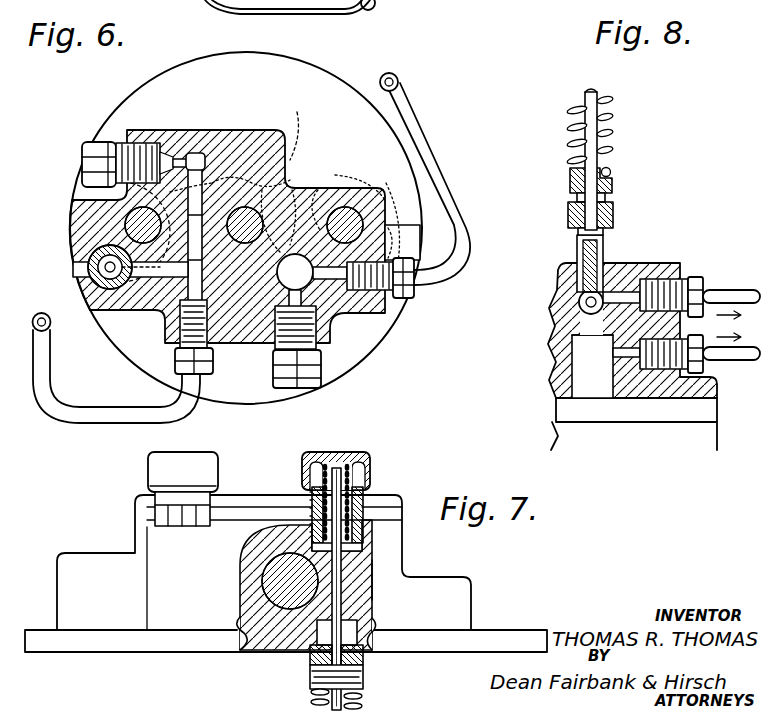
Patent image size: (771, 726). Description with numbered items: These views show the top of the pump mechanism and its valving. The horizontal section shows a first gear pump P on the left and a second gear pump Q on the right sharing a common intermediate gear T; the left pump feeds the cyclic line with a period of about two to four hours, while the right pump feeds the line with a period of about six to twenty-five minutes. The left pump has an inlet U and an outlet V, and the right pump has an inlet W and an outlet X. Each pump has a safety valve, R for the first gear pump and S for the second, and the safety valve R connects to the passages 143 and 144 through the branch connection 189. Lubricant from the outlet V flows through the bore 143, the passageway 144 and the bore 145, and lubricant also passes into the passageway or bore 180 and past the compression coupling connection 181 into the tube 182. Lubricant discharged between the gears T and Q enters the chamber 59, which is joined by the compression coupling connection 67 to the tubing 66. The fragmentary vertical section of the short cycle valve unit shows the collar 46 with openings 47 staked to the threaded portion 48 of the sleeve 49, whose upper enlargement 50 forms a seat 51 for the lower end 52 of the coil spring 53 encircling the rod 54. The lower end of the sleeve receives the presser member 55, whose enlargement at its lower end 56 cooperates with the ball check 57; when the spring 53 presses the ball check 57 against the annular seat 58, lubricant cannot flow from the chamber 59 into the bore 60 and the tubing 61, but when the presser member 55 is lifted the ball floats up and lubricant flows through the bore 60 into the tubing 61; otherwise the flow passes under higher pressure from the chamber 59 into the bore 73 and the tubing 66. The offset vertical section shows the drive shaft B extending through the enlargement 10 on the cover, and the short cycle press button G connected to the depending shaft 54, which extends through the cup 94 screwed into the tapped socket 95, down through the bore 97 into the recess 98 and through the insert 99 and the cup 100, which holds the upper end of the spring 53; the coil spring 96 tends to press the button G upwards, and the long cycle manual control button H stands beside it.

In FIG. 7, the enlargement 10 is at (250, 607).
In FIG. 8, the collar 46 is at (576, 232).
In FIG. 8, the openings 47 is at (568, 217).
In FIG. 8, the threaded portion 48 is at (577, 200).
In FIG. 8, the sleeve 49 is at (605, 248).
In FIG. 8, the enlargement 50 is at (614, 186).
In FIG. 8, the seat 51 is at (570, 185).
In FIG. 8, the lower end of coil spring 52 is at (608, 168).
In FIG. 7, the coil spring 53 is at (325, 693).
In FIG. 8, the coil spring 53 is at (606, 118).
In FIG. 7, the rod 54 is at (338, 465).
In FIG. 8, the rod 54 is at (592, 92).
In FIG. 8, the presser member 55 is at (575, 264).
In FIG. 8, the lower end of presser member 56 is at (578, 290).
In FIG. 8, the ball check 57 is at (579, 318).
In FIG. 8, the annular seat 58 is at (576, 340).
In FIG. 6, the chamber 59 is at (382, 198).
In FIG. 8, the chamber 59 is at (585, 375).
In FIG. 8, the bore 60 is at (645, 266).
In FIG. 8, the tubing 61 is at (722, 296).
In FIG. 6, the tubing 66 is at (437, 150).
In FIG. 8, the tubing 66 is at (733, 363).
In FIG. 6, the compression coupling connection 67 is at (406, 297).
In FIG. 8, the compression coupling connection 67 is at (700, 376).
In FIG. 8, the bore 73 is at (610, 353).
In FIG. 7, the cup 94 is at (363, 505).
In FIG. 7, the tapped socket 95 is at (362, 541).
In FIG. 7, the coil spring 96 is at (312, 505).
In FIG. 7, the bore 97 is at (374, 592).
In FIG. 7, the recess 98 is at (373, 650).
In FIG. 7, the insert 99 is at (312, 664).
In FIG. 7, the cup 100 is at (364, 680).
In FIG. 6, the bore 143 is at (222, 185).
In FIG. 6, the passageway 144 is at (180, 236).
In FIG. 6, the bore 145 is at (86, 294).
In FIG. 6, the passageway or bore 180 is at (178, 322).
In FIG. 6, the compression coupling connection 181 is at (172, 372).
In FIG. 6, the tube 182 is at (108, 427).
In FIG. 6, the branch connection 189 is at (182, 157).
In FIG. 6, the safety valve R is at (86, 142).
In FIG. 6, the first gear pump P is at (100, 200).
In FIG. 6, the outlet V is at (210, 165).
In FIG. 6, the common intermediate gear T is at (280, 171).
In FIG. 6, the inlet W is at (300, 188).
In FIG. 6, the second gear pump Q is at (380, 184).
In FIG. 6, the outlet X is at (302, 280).
In FIG. 6, the safety valve S is at (274, 372).
In FIG. 6, the inlet U is at (160, 320).
In FIG. 7, the long cycle manual control button H is at (214, 455).
In FIG. 7, the short cycle manual control button G is at (371, 454).
In FIG. 7, the drive shaft B is at (285, 600).